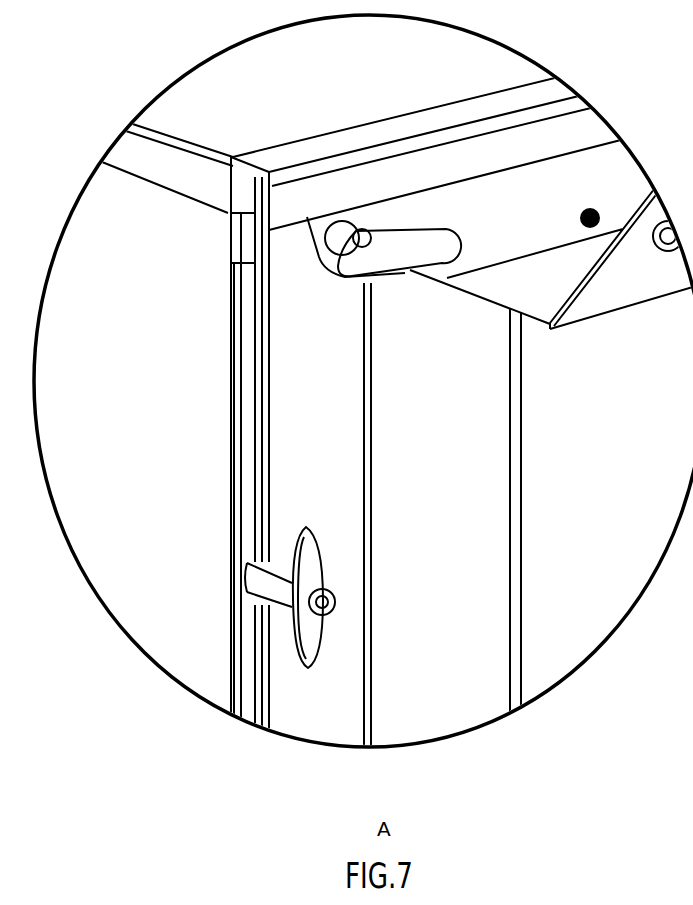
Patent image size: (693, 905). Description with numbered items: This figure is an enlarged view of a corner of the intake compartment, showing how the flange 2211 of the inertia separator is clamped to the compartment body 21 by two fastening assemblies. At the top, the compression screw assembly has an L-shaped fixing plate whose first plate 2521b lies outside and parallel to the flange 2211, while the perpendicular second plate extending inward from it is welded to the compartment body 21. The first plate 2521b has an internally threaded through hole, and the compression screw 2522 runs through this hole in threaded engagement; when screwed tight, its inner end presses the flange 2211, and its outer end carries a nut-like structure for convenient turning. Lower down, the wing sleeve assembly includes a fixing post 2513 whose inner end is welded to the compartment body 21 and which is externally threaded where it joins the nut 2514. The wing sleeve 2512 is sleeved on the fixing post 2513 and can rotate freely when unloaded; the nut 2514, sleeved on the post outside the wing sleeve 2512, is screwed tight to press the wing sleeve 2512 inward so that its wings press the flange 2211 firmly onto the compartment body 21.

The intake compartment body 21 is at (248, 303).
The flange 2211 is at (300, 392).
The first plate 2521b is at (323, 263).
The compression screw 2522 is at (397, 263).
The wing sleeve 2512 is at (268, 575).
The fixing post 2513 is at (337, 600).
The nut 2514 is at (312, 570).